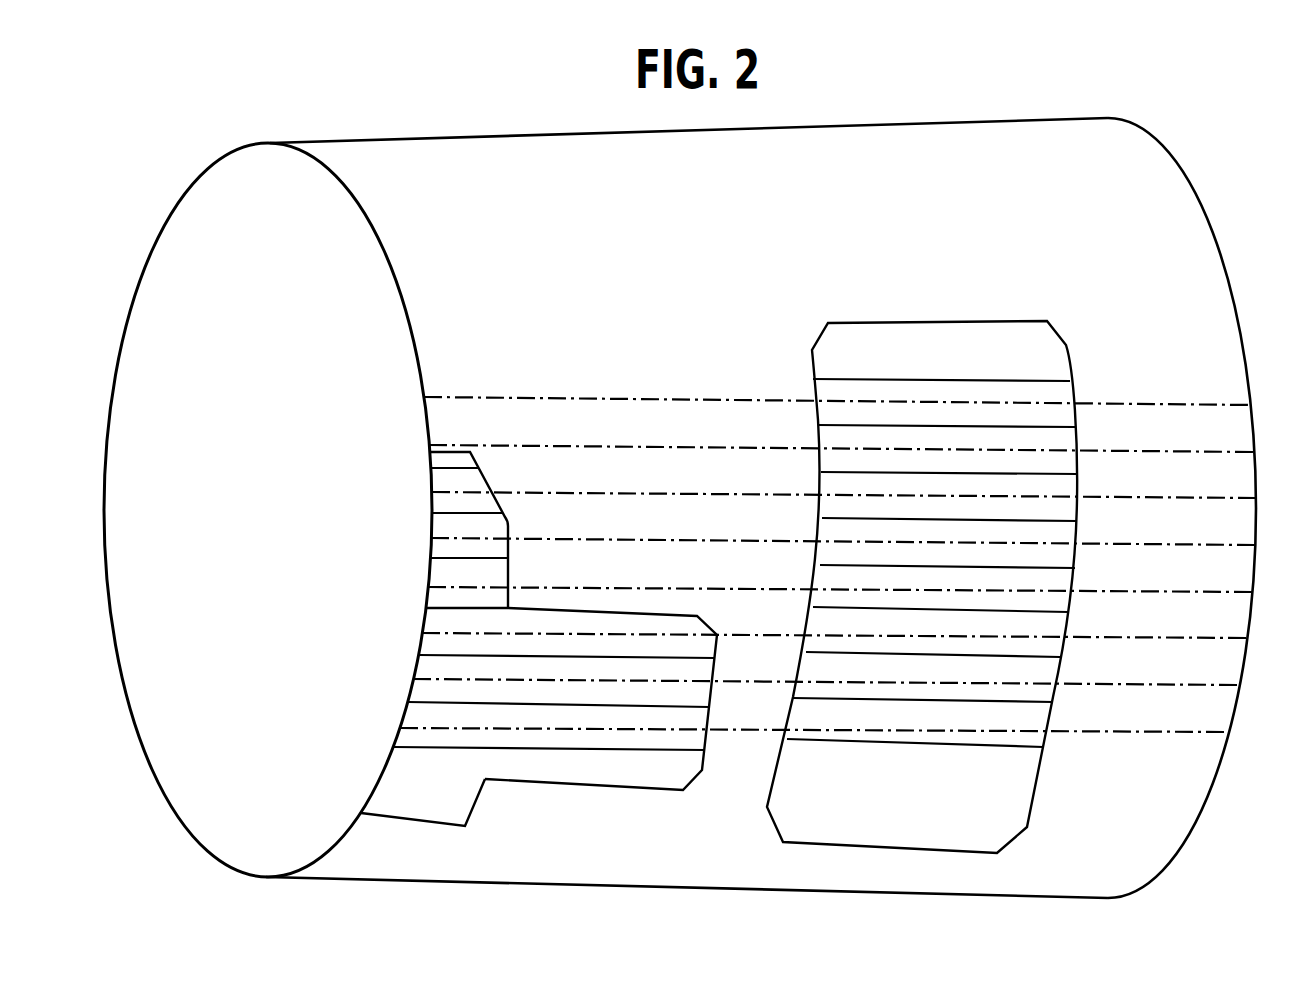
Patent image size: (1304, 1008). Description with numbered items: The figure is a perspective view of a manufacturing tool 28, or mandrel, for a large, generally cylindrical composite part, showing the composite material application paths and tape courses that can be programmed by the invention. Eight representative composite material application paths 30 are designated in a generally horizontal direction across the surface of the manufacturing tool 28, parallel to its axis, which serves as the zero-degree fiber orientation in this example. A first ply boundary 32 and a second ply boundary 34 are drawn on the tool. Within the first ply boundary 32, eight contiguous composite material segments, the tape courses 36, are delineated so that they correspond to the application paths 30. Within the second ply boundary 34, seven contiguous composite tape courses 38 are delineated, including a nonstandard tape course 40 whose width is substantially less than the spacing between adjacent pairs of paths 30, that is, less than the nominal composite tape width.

The manufacturing tool 28 is at (561, 238).
The composite material application paths 30 is at (1150, 406).
The first ply boundary 32 is at (866, 322).
The tape courses 36 is at (1003, 379).
The second ply boundary 34 is at (585, 790).
The composite tape courses 38 is at (428, 766).
The nonstandard tape course 40 is at (446, 460).